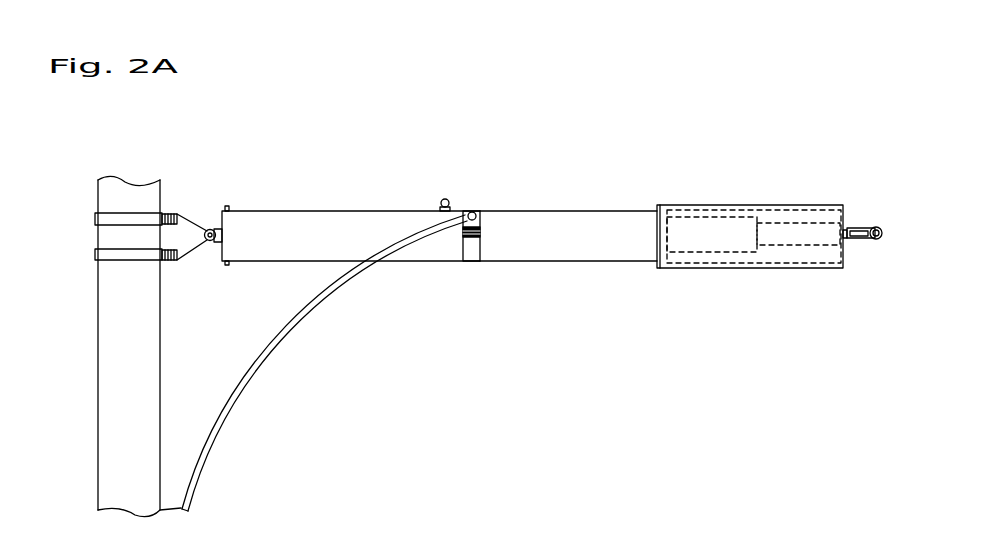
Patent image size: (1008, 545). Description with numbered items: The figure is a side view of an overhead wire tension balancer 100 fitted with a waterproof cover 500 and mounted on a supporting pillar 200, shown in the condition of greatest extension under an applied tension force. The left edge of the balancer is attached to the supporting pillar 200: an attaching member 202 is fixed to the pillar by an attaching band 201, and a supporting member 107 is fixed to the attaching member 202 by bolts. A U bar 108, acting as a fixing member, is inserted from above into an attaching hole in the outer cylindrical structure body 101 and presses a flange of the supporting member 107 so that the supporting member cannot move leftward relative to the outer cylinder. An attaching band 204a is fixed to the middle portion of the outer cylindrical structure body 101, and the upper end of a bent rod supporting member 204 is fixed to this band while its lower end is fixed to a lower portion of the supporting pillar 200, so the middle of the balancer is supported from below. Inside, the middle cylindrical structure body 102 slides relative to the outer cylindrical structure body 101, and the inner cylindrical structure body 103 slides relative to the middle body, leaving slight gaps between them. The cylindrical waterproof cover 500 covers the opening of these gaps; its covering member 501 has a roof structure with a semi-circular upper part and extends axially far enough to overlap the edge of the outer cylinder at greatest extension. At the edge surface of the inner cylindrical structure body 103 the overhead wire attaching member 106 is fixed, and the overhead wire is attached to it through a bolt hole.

The overhead wire tension balancer 100 is at (337, 209).
The outer cylindrical structure body 101 is at (565, 243).
The middle cylindrical structure body 102 is at (725, 245).
The inner cylindrical structure body 103 is at (795, 237).
The overhead wire attaching member 106 is at (845, 230).
The supporting member 107 is at (212, 228).
The U bar 108 is at (228, 208).
The supporting pillar 200 is at (118, 305).
The attaching band 201 is at (108, 218).
The attaching member 202 is at (183, 238).
The supporting member 204 is at (262, 355).
The attaching band 204a is at (472, 252).
The waterproof cover 500 is at (678, 204).
The covering member 501 is at (775, 206).